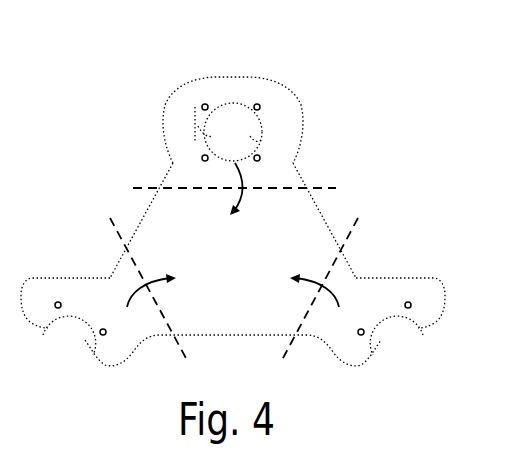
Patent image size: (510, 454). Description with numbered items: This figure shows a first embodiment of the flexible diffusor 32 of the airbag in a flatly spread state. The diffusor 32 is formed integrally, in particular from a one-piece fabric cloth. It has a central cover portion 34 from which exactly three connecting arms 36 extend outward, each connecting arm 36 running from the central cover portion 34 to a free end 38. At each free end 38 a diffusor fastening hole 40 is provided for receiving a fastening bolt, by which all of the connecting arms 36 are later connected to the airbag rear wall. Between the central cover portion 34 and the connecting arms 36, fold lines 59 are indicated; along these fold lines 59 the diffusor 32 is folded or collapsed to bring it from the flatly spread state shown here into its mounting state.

The flexible diffusor 32 is at (124, 112).
The central cover portion 34 is at (242, 270).
The connecting arms 36 is at (286, 172).
The free end 38 is at (229, 70).
The diffusor fastening holes 40 is at (257, 104).
The fold lines 59 is at (318, 189).